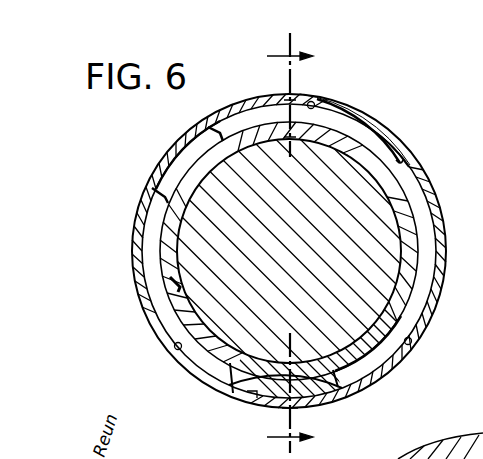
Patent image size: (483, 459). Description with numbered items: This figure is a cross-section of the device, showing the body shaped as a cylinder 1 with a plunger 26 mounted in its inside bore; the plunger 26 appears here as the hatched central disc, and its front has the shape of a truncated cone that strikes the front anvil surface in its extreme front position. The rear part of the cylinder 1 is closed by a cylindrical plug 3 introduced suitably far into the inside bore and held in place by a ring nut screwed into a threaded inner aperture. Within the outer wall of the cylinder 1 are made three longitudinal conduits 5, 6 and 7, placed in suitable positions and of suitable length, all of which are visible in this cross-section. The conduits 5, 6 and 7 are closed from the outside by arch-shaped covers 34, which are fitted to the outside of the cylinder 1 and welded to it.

The cylinder 1 is at (397, 163).
The cylindrical plug 3 is at (290, 246).
The longitudinal conduit 5 is at (312, 102).
The longitudinal conduit 6 is at (413, 341).
The longitudinal conduit 7 is at (176, 350).
The plunger 26 is at (303, 256).
The arch-shaped covers 34 is at (265, 98).